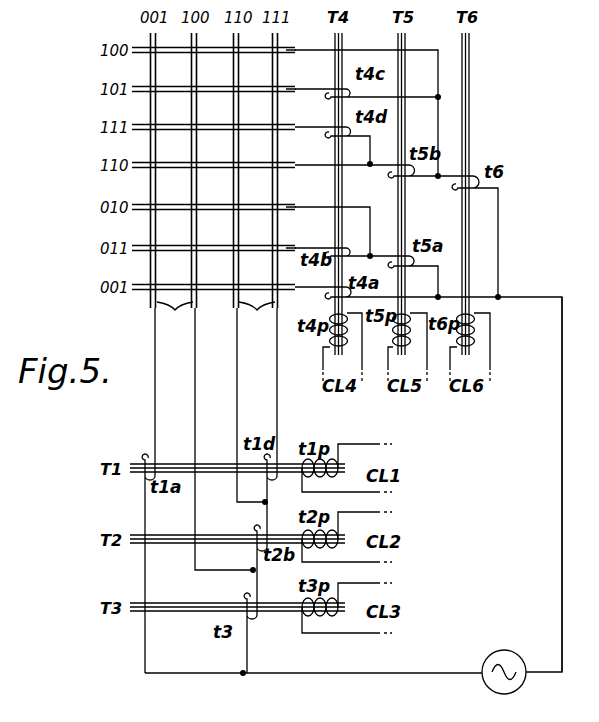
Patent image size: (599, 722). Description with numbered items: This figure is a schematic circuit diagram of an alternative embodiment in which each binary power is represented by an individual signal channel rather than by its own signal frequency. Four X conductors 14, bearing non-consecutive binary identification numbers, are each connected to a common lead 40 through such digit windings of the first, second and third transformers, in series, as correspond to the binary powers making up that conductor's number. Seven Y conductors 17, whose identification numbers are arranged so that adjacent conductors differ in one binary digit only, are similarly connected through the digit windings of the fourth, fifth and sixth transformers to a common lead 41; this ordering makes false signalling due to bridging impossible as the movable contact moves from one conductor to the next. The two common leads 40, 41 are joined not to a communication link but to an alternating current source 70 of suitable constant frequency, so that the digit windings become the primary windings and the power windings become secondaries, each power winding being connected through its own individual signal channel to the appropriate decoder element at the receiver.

The X conductors 14 is at (216, 316).
The Y conductors 17 is at (293, 64).
The common lead 40 is at (433, 673).
The common lead 41 is at (562, 512).
The alternating current source 70 is at (505, 672).